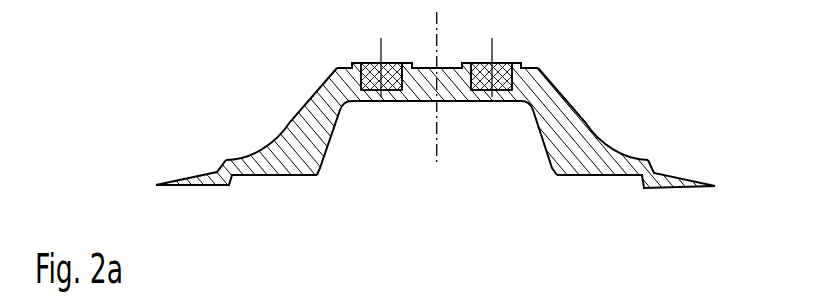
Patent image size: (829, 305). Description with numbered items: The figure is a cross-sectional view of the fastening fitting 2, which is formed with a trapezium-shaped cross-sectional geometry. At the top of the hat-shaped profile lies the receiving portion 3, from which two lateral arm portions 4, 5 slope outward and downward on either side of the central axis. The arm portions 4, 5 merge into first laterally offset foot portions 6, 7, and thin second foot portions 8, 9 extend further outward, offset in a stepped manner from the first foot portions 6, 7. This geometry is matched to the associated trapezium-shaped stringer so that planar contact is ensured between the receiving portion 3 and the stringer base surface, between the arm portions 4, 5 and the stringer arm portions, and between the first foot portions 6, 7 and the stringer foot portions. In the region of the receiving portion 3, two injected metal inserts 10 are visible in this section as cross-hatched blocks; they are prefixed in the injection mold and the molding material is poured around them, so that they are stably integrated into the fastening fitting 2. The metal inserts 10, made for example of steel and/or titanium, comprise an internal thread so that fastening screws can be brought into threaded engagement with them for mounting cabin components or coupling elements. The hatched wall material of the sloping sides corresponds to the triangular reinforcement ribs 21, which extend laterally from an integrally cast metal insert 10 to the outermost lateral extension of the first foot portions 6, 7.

The fastening fitting 2 is at (652, 67).
The receiving portion 3 is at (522, 67).
The lateral arm portion 4 is at (543, 130).
The lateral arm portion 5 is at (326, 131).
The first foot portion 6 is at (593, 160).
The first foot portion 7 is at (277, 151).
The second foot portion 8 is at (687, 188).
The second foot portion 9 is at (190, 187).
The metal insert 10 is at (388, 62).
The reinforcement rib 21 is at (323, 93).